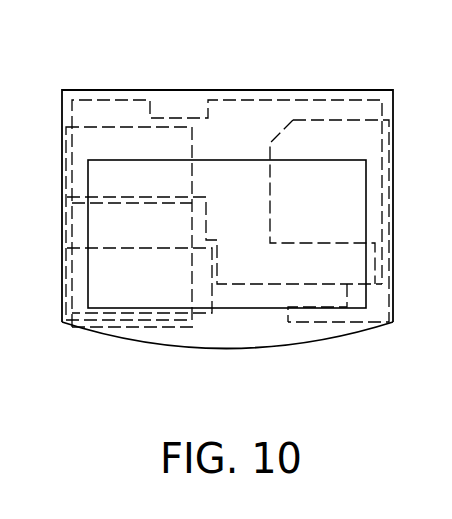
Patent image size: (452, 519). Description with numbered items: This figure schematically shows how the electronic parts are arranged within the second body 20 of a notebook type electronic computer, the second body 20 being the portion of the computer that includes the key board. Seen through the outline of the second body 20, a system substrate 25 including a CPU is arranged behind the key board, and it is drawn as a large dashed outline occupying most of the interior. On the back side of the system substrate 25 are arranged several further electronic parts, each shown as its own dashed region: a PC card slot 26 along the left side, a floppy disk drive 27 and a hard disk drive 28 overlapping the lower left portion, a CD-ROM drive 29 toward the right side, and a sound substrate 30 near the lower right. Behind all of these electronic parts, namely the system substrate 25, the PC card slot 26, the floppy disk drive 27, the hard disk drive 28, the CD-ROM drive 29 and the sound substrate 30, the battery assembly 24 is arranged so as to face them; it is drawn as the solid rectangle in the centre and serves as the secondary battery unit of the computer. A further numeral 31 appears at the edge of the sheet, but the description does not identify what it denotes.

The second body 20 is at (96, 85).
The battery assembly 24 is at (355, 190).
The system substrate 25 is at (287, 98).
The PC card slot 26 is at (64, 183).
The floppy disk drive 27 is at (64, 231).
The hard disk drive 28 is at (199, 326).
The CD-ROM drive 29 is at (397, 141).
The sound substrate 30 is at (314, 326).
The seventh electrode layer 31 is at (442, 378).